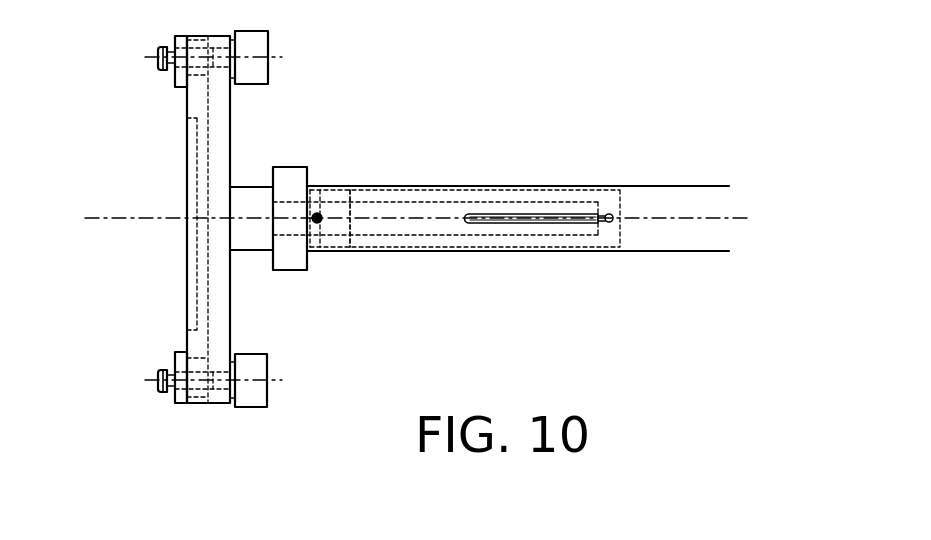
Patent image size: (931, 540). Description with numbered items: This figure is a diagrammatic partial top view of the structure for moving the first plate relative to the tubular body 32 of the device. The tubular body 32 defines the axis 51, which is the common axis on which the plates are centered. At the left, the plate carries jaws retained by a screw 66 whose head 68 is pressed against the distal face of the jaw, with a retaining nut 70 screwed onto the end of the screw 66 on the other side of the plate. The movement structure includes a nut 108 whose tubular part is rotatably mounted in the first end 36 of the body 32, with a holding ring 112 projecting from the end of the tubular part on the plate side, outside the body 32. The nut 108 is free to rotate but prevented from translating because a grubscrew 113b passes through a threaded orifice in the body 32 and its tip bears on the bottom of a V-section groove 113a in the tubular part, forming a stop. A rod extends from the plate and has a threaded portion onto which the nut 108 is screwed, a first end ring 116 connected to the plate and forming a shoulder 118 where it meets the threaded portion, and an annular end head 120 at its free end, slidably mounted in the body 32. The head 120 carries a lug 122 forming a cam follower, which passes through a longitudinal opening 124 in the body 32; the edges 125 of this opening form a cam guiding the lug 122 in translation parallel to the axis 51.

The tubular body 32 is at (717, 187).
The first end of the body 36 is at (310, 188).
The axis 51 is at (106, 216).
The screw 66 is at (217, 388).
The head of the screw 68 is at (157, 376).
The retaining nut 70 is at (257, 393).
The nut 108 is at (298, 271).
The holding ring 112 is at (300, 166).
The V-section groove 113a is at (350, 190).
The grubscrew 113b is at (322, 216).
The first end ring 116 is at (254, 186).
The shoulder 118 is at (275, 248).
The annular end head 120 is at (620, 207).
The lug 122 is at (609, 223).
The longitudinal opening 124 is at (548, 221).
The edges of the opening 125 is at (497, 220).